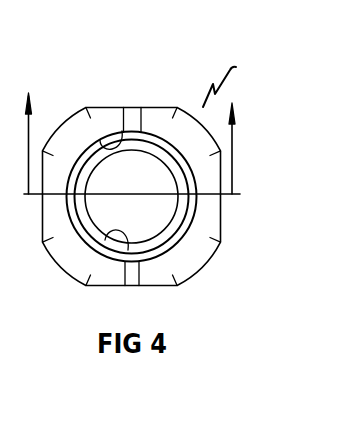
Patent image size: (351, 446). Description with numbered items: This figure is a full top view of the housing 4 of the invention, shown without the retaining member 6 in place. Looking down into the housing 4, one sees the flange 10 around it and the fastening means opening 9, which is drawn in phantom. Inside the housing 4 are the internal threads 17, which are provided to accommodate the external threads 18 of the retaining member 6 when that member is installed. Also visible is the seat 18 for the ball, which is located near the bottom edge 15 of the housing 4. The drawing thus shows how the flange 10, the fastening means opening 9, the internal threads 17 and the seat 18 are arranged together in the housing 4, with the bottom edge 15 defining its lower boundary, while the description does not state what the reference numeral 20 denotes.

The section view indicator 4 is at (227, 82).
The central axis line 6 is at (131, 203).
The connecting tabs 9 is at (134, 130).
The outer housing 10 is at (198, 262).
The lower hook 15 is at (125, 232).
The upper hook 17 is at (122, 137).
The inner ring 18 is at (148, 264).
The width dimension arrows 20 is at (117, 140).